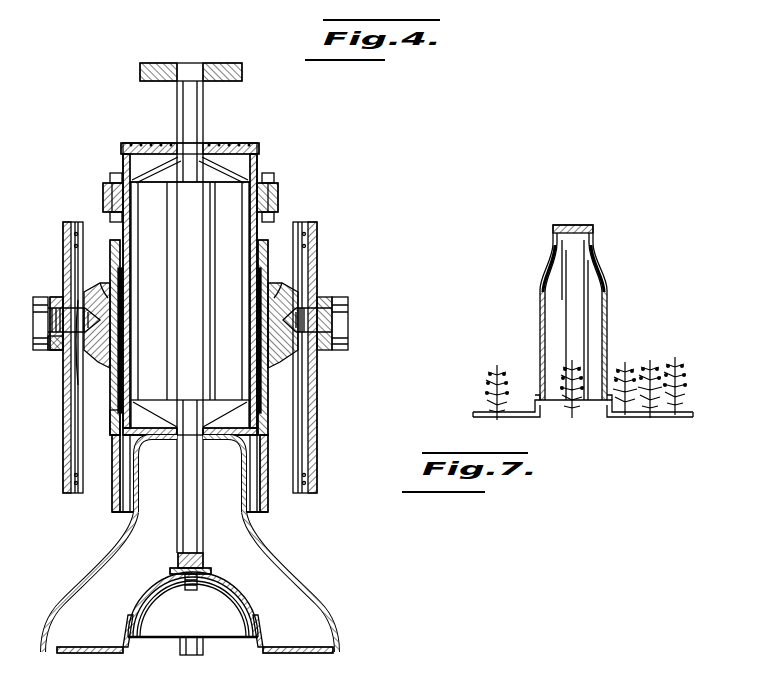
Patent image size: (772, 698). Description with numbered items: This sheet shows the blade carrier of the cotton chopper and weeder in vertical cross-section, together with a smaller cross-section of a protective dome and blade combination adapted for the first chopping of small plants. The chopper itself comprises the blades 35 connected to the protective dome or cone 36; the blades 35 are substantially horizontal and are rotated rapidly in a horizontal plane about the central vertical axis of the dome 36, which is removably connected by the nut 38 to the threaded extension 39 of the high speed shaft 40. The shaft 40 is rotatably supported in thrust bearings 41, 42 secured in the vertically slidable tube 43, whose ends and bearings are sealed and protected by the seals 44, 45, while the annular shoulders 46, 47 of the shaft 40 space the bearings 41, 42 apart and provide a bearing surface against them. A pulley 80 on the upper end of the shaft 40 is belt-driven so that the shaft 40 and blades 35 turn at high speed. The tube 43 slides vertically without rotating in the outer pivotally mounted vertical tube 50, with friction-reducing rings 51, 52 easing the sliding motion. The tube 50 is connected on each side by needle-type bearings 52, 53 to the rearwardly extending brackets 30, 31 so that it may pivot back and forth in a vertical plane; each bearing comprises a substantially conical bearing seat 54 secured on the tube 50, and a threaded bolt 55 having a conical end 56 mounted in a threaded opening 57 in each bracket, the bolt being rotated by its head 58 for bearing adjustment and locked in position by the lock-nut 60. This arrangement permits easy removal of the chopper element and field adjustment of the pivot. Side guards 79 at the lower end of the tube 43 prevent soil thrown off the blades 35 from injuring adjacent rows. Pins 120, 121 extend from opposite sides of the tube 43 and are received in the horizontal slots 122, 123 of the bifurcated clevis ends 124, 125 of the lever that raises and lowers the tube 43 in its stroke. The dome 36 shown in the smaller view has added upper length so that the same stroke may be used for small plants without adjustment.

In FIG. 4, the vertical bracket member 30 is at (63, 432).
In FIG. 4, the vertical bracket member 31 is at (318, 406).
In FIG. 4, the blades 35 is at (88, 647).
In FIG. 7, the blades 35 is at (664, 414).
In FIG. 4, the protective dome or cone 36 is at (140, 614).
In FIG. 7, the protective dome or cone 36 is at (608, 274).
In FIG. 4, the nut 38 is at (205, 582).
In FIG. 4, the threaded extension 39 is at (188, 590).
In FIG. 4, the shaft 40 is at (200, 118).
In FIG. 4, the thrust bearing 41 is at (258, 165).
In FIG. 4, the thrust bearing 42 is at (224, 400).
In FIG. 4, the vertically slidable tube 43 is at (127, 225).
In FIG. 4, the seal 44 is at (232, 143).
In FIG. 4, the seal 45 is at (148, 443).
In FIG. 4, the annular shoulder 46 is at (216, 182).
In FIG. 4, the annular shoulder 47 is at (221, 398).
In FIG. 4, the outer pivotally mounted vertical tube 50 is at (268, 500).
In FIG. 4, the friction-reducing ring 51 is at (113, 262).
In FIG. 4, the friction-reducing ring 52 is at (112, 426).
In FIG. 4, the needle-type bearing 53 is at (95, 290).
In FIG. 4, the conical bearing seat 54 is at (100, 342).
In FIG. 4, the threaded bolt 55 is at (84, 355).
In FIG. 4, the conical end 56 is at (124, 334).
In FIG. 4, the threaded opening 57 is at (55, 300).
In FIG. 4, the head 58 is at (44, 330).
In FIG. 4, the lock-nut 60 is at (55, 350).
In FIG. 4, the side guard 79 is at (86, 588).
In FIG. 4, the pulley 80 is at (166, 63).
In FIG. 4, the pin 120 is at (105, 190).
In FIG. 4, the pin 121 is at (278, 195).
In FIG. 4, the horizontal slot 122 is at (110, 218).
In FIG. 4, the horizontal slot 123 is at (274, 218).
In FIG. 4, the bifurcated clevis end 124 is at (115, 173).
In FIG. 4, the bifurcated clevis end 125 is at (270, 174).